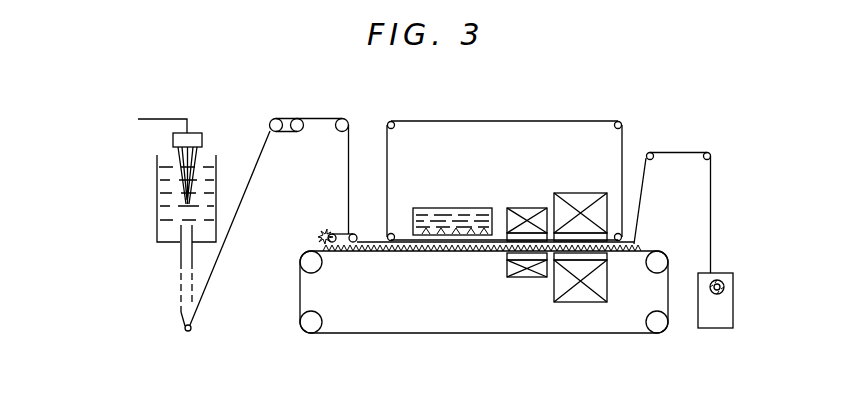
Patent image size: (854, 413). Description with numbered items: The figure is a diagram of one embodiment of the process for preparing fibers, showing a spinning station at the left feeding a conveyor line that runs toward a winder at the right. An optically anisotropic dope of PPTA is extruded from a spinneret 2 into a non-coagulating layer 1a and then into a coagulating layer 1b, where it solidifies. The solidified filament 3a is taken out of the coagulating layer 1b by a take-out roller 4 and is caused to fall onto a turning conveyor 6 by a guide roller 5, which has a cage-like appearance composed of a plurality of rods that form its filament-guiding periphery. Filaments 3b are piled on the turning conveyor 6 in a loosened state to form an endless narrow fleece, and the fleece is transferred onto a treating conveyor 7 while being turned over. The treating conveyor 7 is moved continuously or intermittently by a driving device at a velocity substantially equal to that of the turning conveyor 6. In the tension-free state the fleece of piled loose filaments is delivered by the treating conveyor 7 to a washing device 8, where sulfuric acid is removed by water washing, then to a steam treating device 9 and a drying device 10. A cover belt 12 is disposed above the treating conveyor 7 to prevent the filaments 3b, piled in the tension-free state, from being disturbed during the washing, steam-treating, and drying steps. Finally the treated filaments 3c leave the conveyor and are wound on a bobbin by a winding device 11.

The non-coagulating layer 1a is at (206, 164).
The coagulating layer 1b is at (157, 193).
The spinneret 2 is at (191, 131).
The filament 3a is at (251, 183).
The filaments 3b is at (330, 233).
The filaments 3c is at (642, 203).
The take-out roller 4 is at (298, 118).
The guide roller 5 is at (346, 118).
The turning conveyor 6 is at (357, 234).
The treating conveyor 7 is at (353, 334).
The washing device 8 is at (443, 208).
The steam treating device 9 is at (520, 208).
The drying device 10 is at (574, 193).
The winding device 11 is at (713, 273).
The cover belt 12 is at (485, 121).